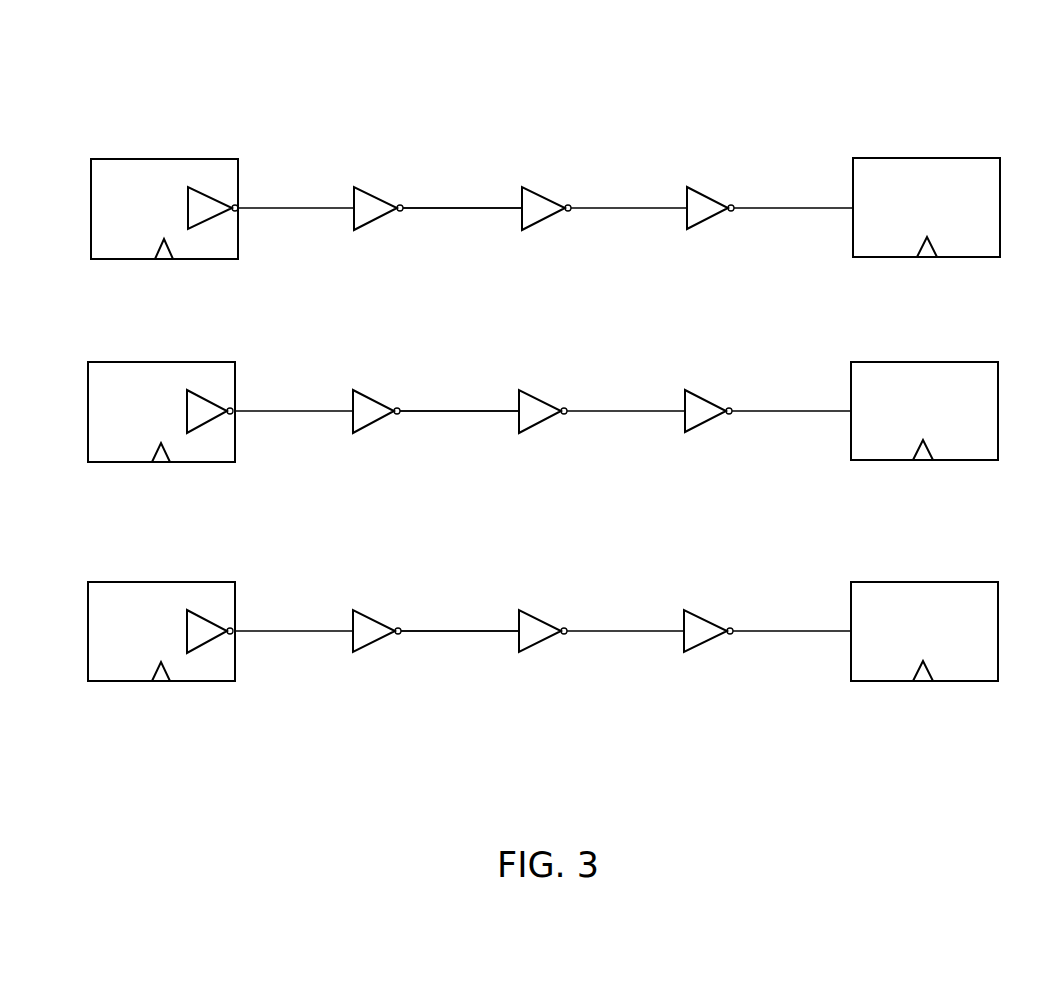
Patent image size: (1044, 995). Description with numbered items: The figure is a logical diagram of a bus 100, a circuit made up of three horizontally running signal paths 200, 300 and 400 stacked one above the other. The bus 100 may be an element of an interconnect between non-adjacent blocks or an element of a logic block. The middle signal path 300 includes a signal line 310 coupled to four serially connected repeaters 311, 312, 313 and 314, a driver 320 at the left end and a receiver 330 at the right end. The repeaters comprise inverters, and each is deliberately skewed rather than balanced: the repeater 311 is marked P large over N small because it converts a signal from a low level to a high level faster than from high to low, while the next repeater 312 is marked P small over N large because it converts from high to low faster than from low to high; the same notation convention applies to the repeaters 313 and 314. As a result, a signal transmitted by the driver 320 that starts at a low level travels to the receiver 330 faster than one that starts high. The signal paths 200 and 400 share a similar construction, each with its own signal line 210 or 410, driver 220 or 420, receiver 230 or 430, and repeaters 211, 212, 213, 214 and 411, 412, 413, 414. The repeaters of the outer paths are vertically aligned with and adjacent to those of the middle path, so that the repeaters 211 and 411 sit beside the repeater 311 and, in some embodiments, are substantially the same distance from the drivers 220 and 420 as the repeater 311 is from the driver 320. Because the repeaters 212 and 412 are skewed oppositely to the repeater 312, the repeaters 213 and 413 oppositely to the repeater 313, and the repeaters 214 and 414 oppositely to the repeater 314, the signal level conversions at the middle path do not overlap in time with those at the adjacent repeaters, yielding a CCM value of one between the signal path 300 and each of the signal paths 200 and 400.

The bus 100 is at (888, 46).
The signal path 200 is at (647, 131).
The signal line 210 is at (410, 211).
The repeater 211 is at (218, 198).
The repeater 212 is at (369, 190).
The repeater 213 is at (536, 190).
The repeater 214 is at (698, 187).
The driver 220 is at (165, 159).
The receiver 230 is at (922, 158).
The signal path 300 is at (646, 338).
The signal line 310 is at (409, 414).
The repeater 311 is at (217, 402).
The repeater 312 is at (367, 393).
The repeater 313 is at (533, 393).
The repeater 314 is at (696, 391).
The driver 320 is at (162, 362).
The receiver 330 is at (917, 362).
The signal path 400 is at (646, 558).
The signal line 410 is at (409, 634).
The repeater 411 is at (217, 622).
The repeater 412 is at (367, 614).
The repeater 413 is at (533, 614).
The repeater 414 is at (698, 611).
The driver 420 is at (163, 582).
The receiver 430 is at (917, 582).